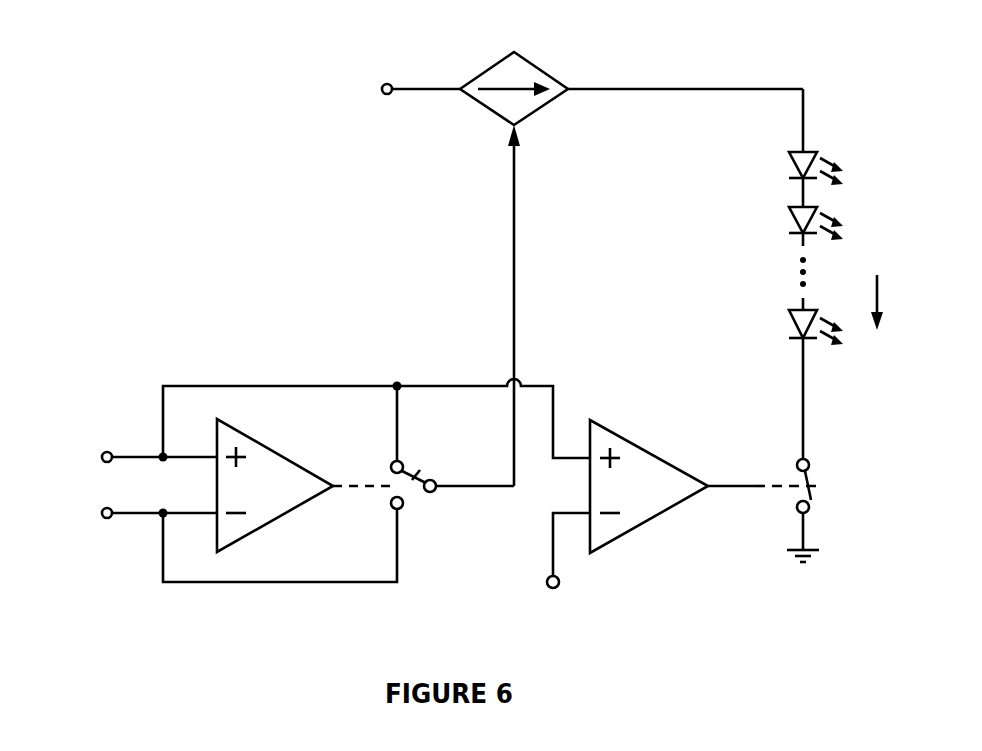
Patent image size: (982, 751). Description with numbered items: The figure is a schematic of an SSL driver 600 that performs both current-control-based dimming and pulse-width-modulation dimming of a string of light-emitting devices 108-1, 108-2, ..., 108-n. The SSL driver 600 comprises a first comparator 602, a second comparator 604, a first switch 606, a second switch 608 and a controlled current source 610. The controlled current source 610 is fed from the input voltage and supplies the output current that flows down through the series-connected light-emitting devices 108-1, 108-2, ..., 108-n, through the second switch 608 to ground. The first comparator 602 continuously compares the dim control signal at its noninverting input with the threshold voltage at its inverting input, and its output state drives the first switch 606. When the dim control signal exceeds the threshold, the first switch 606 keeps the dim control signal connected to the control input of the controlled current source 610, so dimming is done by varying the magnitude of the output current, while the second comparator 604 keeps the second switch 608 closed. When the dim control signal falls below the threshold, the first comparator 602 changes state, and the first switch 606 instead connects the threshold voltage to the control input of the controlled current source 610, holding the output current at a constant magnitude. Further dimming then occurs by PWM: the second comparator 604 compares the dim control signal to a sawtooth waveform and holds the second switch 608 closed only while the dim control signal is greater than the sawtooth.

The SSL driver 600 is at (162, 190).
The first comparator 602 is at (291, 446).
The second comparator 604 is at (663, 446).
The first switch 606 is at (428, 512).
The second switch 608 is at (826, 506).
The controlled current source 610 is at (514, 45).
The light-emitting device 108-1 is at (781, 168).
The light-emitting device 108-2 is at (781, 223).
The light-emitting device 108-n is at (781, 328).